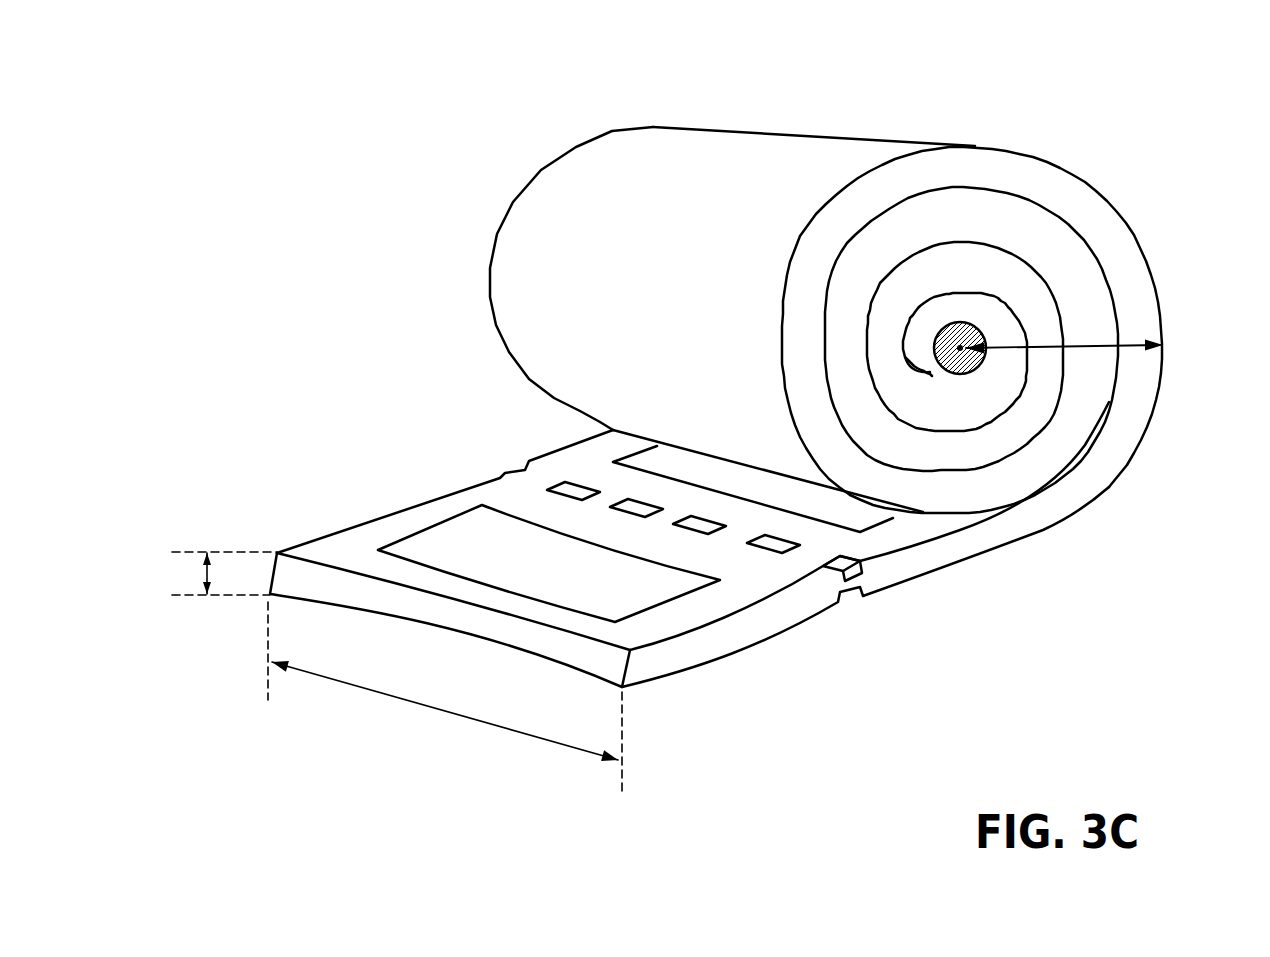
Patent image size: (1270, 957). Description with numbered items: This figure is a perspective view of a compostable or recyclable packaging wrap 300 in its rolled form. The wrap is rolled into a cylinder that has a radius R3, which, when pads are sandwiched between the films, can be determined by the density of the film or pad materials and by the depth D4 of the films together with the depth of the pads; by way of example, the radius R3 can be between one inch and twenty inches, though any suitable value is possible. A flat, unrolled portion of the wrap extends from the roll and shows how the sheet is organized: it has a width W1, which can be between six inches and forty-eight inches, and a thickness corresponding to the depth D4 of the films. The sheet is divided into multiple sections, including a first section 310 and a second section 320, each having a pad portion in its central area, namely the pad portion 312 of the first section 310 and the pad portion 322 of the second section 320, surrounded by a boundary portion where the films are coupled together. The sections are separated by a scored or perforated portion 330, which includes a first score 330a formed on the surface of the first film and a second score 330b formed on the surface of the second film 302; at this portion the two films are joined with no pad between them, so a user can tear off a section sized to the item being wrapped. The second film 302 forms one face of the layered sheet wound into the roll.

The compostable or recyclable packaging wrap 300 is at (452, 171).
The second film 302 is at (958, 335).
The first section 310 is at (350, 547).
The pad portion 312 is at (475, 537).
The second section 320 is at (557, 470).
The pad portion 322 is at (873, 513).
The scored or perforated portion 330 is at (782, 692).
The first score 330a is at (836, 568).
The second score 330b is at (840, 598).
The radius R3 is at (1083, 345).
The depth of the films D4 is at (218, 573).
The width W1 is at (445, 697).